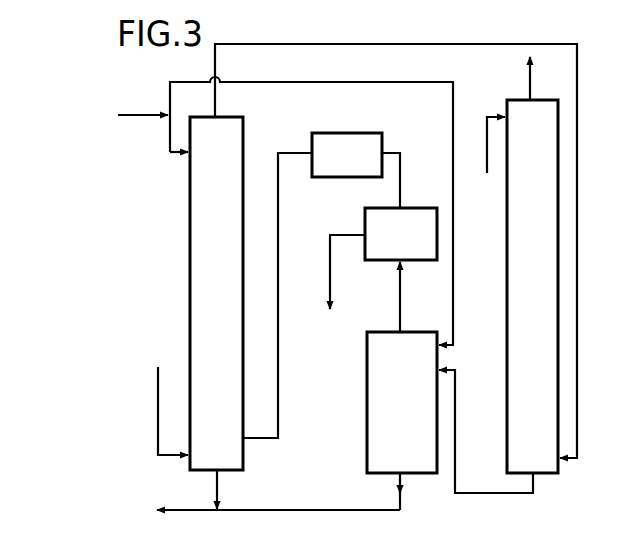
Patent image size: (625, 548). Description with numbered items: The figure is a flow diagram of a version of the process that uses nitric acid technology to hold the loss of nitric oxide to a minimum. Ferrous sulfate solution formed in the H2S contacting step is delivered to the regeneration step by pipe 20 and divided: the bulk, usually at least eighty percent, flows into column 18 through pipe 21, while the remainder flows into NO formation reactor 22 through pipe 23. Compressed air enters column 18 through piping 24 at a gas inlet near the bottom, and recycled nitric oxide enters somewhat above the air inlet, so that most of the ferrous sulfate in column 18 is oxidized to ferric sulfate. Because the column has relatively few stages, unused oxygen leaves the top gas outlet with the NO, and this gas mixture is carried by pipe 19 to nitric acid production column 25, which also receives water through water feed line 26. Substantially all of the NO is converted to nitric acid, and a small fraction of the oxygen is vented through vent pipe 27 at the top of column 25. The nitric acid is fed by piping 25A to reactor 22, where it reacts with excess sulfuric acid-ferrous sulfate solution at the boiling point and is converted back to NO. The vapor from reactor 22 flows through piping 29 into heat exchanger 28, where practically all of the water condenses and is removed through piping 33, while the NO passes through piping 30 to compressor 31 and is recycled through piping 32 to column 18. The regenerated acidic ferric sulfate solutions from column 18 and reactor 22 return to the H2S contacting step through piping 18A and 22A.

The column 18 is at (229, 320).
The piping 18A is at (217, 484).
The pipe 19 is at (397, 44).
The pipe 20 is at (158, 115).
The pipe 21 is at (176, 153).
The NO formation reactor 22 is at (411, 412).
The piping 22A is at (444, 504).
The pipe 23 is at (363, 82).
The piping 24 is at (158, 432).
The nitric acid production column 25 is at (548, 287).
The piping 25A is at (486, 493).
The water feed line 26 is at (487, 173).
The vent pipe 27 is at (566, 89).
The heat exchanger 28 is at (413, 250).
The piping 29 is at (437, 306).
The piping 30 is at (437, 190).
The compressor 31 is at (355, 169).
The piping 32 is at (278, 295).
The piping 33 is at (368, 283).